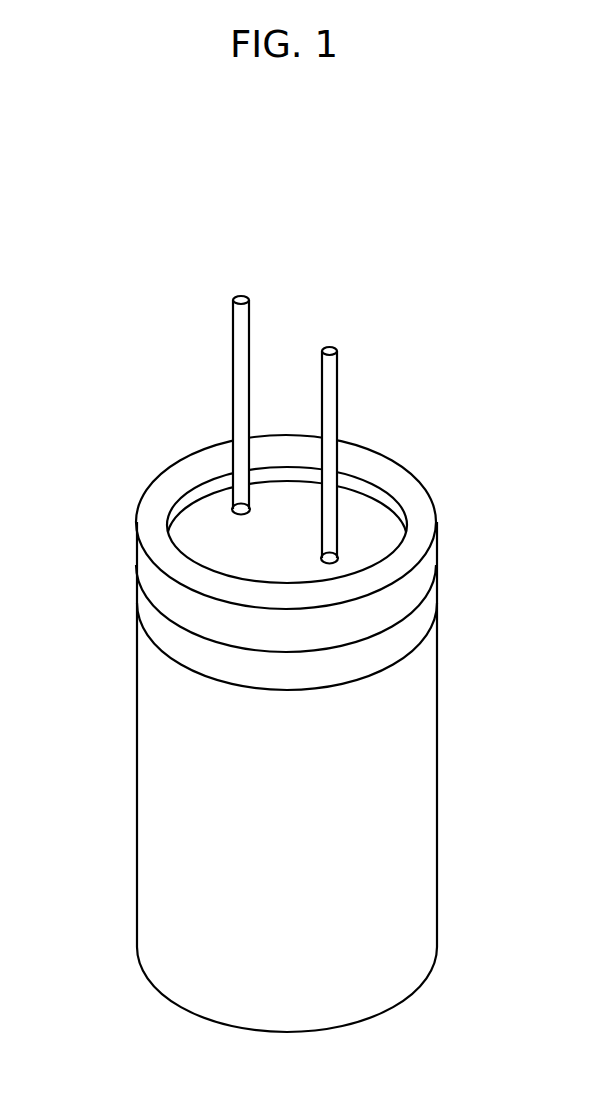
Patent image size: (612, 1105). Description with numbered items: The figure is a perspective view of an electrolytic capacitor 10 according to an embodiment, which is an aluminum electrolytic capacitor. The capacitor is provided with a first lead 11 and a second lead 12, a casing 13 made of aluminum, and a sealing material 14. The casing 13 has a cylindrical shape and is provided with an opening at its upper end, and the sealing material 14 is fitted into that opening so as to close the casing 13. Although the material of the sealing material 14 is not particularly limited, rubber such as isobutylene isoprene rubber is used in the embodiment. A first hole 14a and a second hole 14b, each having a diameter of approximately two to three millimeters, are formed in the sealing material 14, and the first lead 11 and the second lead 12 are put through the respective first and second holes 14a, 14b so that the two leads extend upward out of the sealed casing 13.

The electrolytic capacitor 10 is at (86, 225).
The first lead 11 is at (243, 296).
The second lead 12 is at (333, 346).
The casing 13 is at (137, 791).
The sealing material 14 is at (248, 555).
The first hole 14a is at (232, 508).
The second hole 14b is at (338, 553).